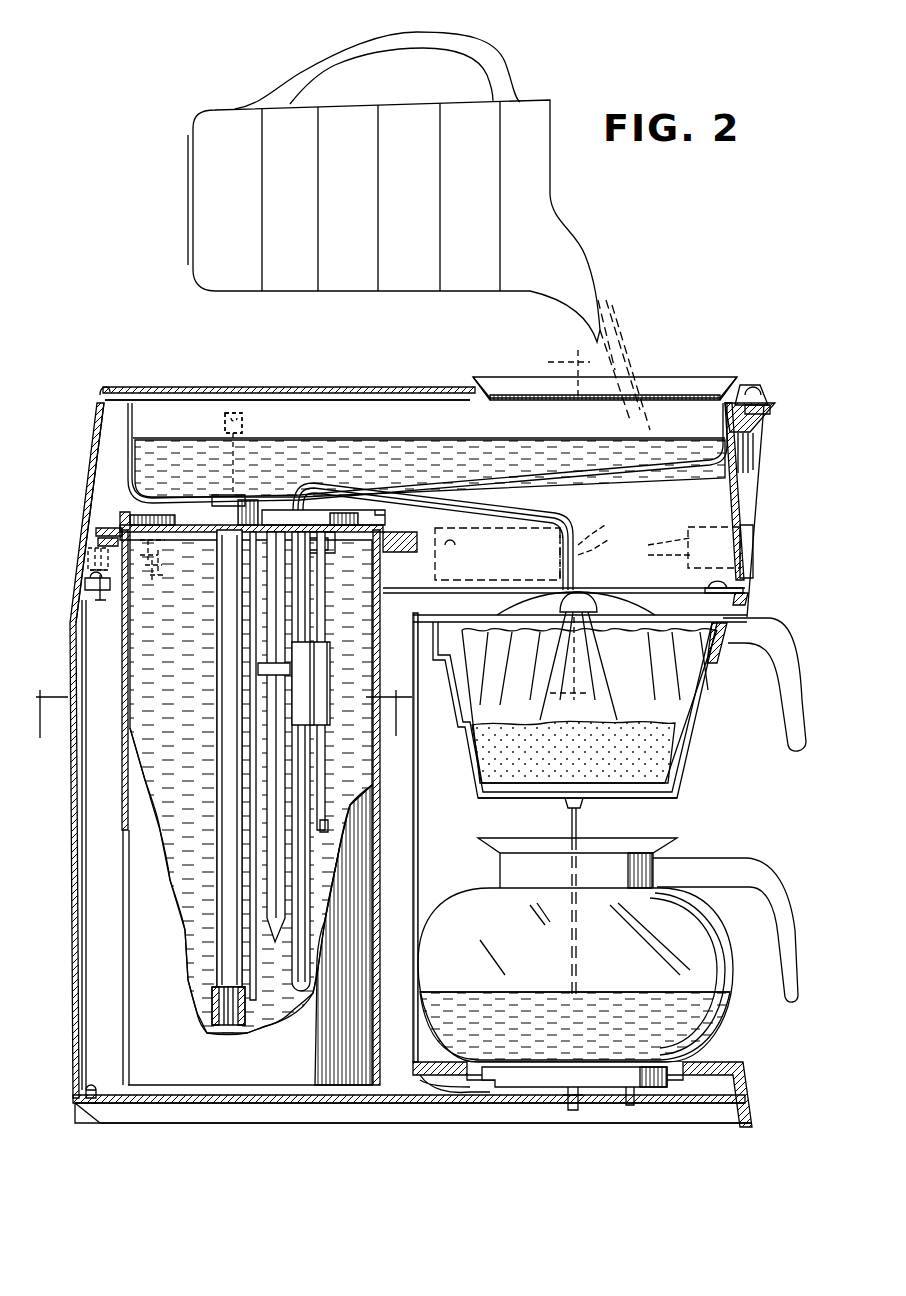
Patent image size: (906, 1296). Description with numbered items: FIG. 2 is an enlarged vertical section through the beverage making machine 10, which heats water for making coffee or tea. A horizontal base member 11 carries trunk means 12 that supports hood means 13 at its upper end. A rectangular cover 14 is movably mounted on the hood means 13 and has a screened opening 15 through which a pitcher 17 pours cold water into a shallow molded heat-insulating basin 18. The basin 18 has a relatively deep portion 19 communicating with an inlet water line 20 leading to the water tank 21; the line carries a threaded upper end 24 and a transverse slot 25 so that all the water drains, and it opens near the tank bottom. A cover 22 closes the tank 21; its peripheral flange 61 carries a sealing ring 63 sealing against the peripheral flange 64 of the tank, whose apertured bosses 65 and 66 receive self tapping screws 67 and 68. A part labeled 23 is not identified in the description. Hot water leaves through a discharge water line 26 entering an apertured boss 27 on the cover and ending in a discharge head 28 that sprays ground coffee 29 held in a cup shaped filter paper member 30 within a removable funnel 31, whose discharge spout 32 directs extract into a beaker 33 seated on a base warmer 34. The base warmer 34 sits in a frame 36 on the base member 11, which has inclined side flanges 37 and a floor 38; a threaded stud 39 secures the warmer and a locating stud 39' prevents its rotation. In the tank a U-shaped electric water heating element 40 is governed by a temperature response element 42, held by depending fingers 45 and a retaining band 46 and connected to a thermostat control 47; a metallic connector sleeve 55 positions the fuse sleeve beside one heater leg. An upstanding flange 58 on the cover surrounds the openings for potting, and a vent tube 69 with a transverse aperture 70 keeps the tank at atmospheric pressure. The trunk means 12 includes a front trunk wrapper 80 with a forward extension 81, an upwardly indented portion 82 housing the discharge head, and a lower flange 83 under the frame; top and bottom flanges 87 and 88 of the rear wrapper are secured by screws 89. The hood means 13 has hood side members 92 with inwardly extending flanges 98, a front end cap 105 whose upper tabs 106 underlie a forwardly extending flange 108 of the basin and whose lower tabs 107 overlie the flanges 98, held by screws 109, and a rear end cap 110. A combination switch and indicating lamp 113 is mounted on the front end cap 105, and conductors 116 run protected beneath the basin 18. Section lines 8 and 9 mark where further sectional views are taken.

The section line 8— 8 is at (569, 530).
The section line 9— 9 is at (220, 705).
The beverage making machine 10 is at (87, 317).
The horizontal base member 11 is at (188, 1144).
The trunk means 12 is at (62, 823).
The hood means 13 is at (62, 380).
The rectangular cover 14 is at (210, 386).
The screened opening 15 is at (662, 392).
The pitcher 17 is at (530, 104).
The basin 18 is at (424, 396).
The relatively deep portion 19 is at (180, 495).
The inlet water line 20 is at (225, 757).
The water tank 21 is at (130, 728).
The cover 22 is at (111, 524).
The tank cover plate 23 is at (249, 511).
The threaded upper end 24 is at (250, 505).
The transverse slot 25 is at (218, 498).
The discharge water line 26 is at (490, 502).
The apertured boss 27 is at (336, 542).
The discharge head 28 is at (580, 600).
The ground coffee 29 is at (670, 757).
The cup shaped member of filter paper 30 is at (700, 697).
The removable funnel 31 is at (678, 772).
The discharge spout 32 is at (583, 806).
The beaker 33 is at (733, 990).
The base warmer 34 is at (668, 1076).
The frame 36 is at (748, 1088).
The inclined side flanges 37 is at (512, 1118).
The floor 38 is at (355, 1104).
The threaded stud 39 is at (579, 1119).
The locating stud 39' is at (641, 1119).
The U-shaped electric water heating element 40 is at (294, 960).
The temperature response element 42 is at (285, 852).
The depending fingers 45 is at (282, 632).
The retaining band 46 is at (262, 672).
The thermostat control 47 is at (497, 554).
The metallic connector sleeve 55 is at (330, 716).
The upstanding flange 58 is at (283, 510).
The peripheral flange 61 is at (97, 541).
The sealing ring 63 is at (386, 516).
The peripheral flange 64 is at (417, 548).
The apertured boss 65 is at (88, 562).
The apertured boss 66 is at (122, 622).
The self tapping screw 67 is at (96, 531).
The self tapping screw 68 is at (150, 543).
The vent tube 69 is at (244, 425).
The transverse aperture 70 is at (224, 425).
The front trunk wrapper 80 is at (420, 840).
The forward extension 81 is at (450, 616).
The upwardly indented portion 82 is at (640, 615).
The forward extension or flange 83 is at (432, 1086).
The top flange 87 is at (105, 592).
The bottom flange 88 is at (93, 1124).
The screws 89 is at (86, 588).
The hood side members 92 is at (611, 539).
The inwardly extending flanges 98 is at (648, 590).
The front end cap 105 is at (736, 490).
The upper tabs 106 is at (770, 405).
The lower tabs 107 is at (750, 578).
The forwardly extending flange 108 is at (750, 386).
The screws 109 is at (762, 395).
The rear end cap 110 is at (88, 487).
The combination switch and indicating lamp 113 is at (748, 540).
The conductors 116 is at (418, 548).